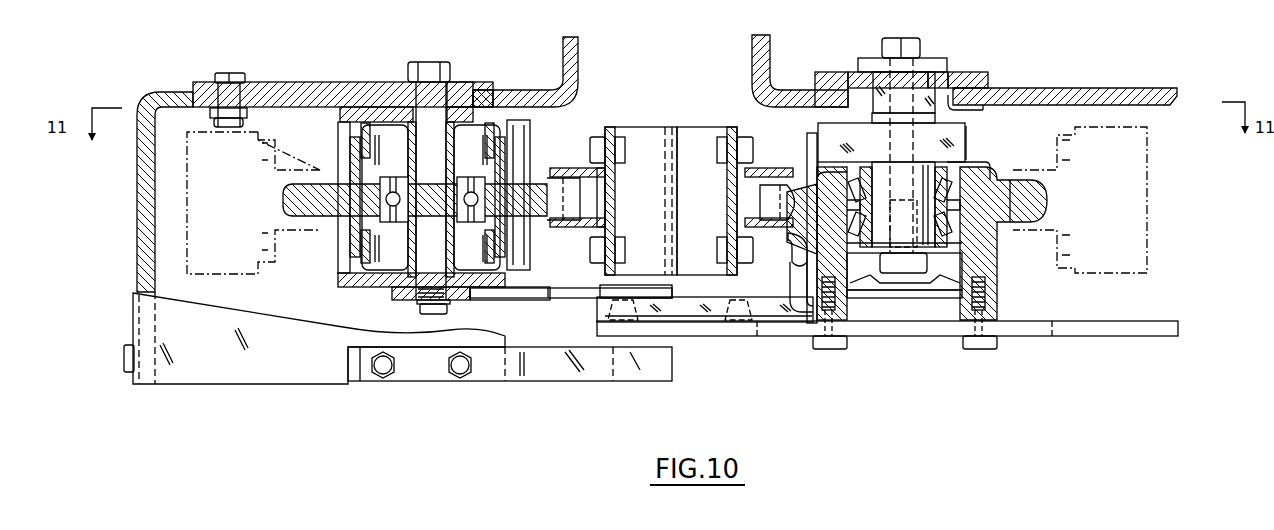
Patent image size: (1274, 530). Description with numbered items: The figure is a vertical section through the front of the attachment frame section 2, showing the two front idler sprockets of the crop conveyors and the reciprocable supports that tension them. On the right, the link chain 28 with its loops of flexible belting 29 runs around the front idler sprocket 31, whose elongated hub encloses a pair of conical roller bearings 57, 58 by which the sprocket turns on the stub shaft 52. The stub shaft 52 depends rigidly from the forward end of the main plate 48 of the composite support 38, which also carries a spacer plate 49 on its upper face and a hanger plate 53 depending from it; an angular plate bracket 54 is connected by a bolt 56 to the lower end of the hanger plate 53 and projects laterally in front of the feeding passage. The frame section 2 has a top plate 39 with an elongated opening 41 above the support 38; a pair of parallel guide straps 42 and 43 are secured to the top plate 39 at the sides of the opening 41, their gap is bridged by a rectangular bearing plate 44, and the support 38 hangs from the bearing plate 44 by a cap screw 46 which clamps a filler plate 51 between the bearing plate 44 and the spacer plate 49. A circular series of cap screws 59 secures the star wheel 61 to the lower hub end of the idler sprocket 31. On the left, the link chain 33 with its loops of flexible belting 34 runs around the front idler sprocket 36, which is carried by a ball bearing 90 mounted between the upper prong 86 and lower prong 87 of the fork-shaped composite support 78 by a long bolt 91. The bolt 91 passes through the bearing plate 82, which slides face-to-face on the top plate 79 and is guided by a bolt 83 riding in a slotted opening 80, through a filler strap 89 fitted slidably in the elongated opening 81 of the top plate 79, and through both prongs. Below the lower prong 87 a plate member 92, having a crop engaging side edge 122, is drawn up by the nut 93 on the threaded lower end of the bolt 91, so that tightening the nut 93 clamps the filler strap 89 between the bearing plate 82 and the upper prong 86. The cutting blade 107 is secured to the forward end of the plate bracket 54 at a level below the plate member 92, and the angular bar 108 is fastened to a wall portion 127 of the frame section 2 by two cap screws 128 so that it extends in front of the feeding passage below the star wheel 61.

The attachment frame section 2 is at (551, 58).
The endless link chain 28 is at (784, 168).
The loops of flexible belting 29 is at (700, 128).
The front idler sprocket 31 is at (997, 273).
The endless link chain 33 is at (549, 170).
The loops of flexible belting 34 is at (633, 128).
The front idler sprocket 36 is at (333, 212).
The composite support 38 is at (968, 135).
The top plate 39 is at (1118, 95).
The elongated opening 41 is at (955, 107).
The guide strap 42 is at (825, 72).
The guide strap 43 is at (988, 76).
The bearing plate 44 is at (867, 58).
The cap screw 46 is at (902, 40).
The main plate 48 is at (967, 152).
The spacer plate 49 is at (862, 105).
The filler plate 51 is at (922, 83).
The stub shaft 52 is at (882, 188).
The hanger plate 53 is at (810, 134).
The angular plate bracket 54 is at (792, 300).
The bolt 56 is at (792, 258).
The conical roller bearing 57 is at (958, 197).
The conical roller bearing 58 is at (952, 230).
The cap screw 59 is at (833, 349).
The star wheel 61 is at (1102, 337).
The composite support 78 is at (338, 130).
The top plate 79 is at (299, 97).
The slotted opening 80 is at (250, 106).
The elongated opening 81 is at (478, 102).
The bearing plate 82 is at (192, 92).
The bolt 83 is at (230, 73).
The upper prong 86 is at (353, 108).
The lower prong 87 is at (338, 283).
The filler strap 89 is at (458, 90).
The ball bearing 90 is at (392, 192).
The long bolt 91 is at (428, 62).
The plate member 92 is at (567, 297).
The nut 93 is at (450, 308).
The cutting blade 107 is at (770, 318).
The angular bar 108 is at (558, 378).
The crop engaging side edge 122 is at (673, 291).
The wall portion 127 is at (275, 385).
The cap screw 128 is at (392, 376).